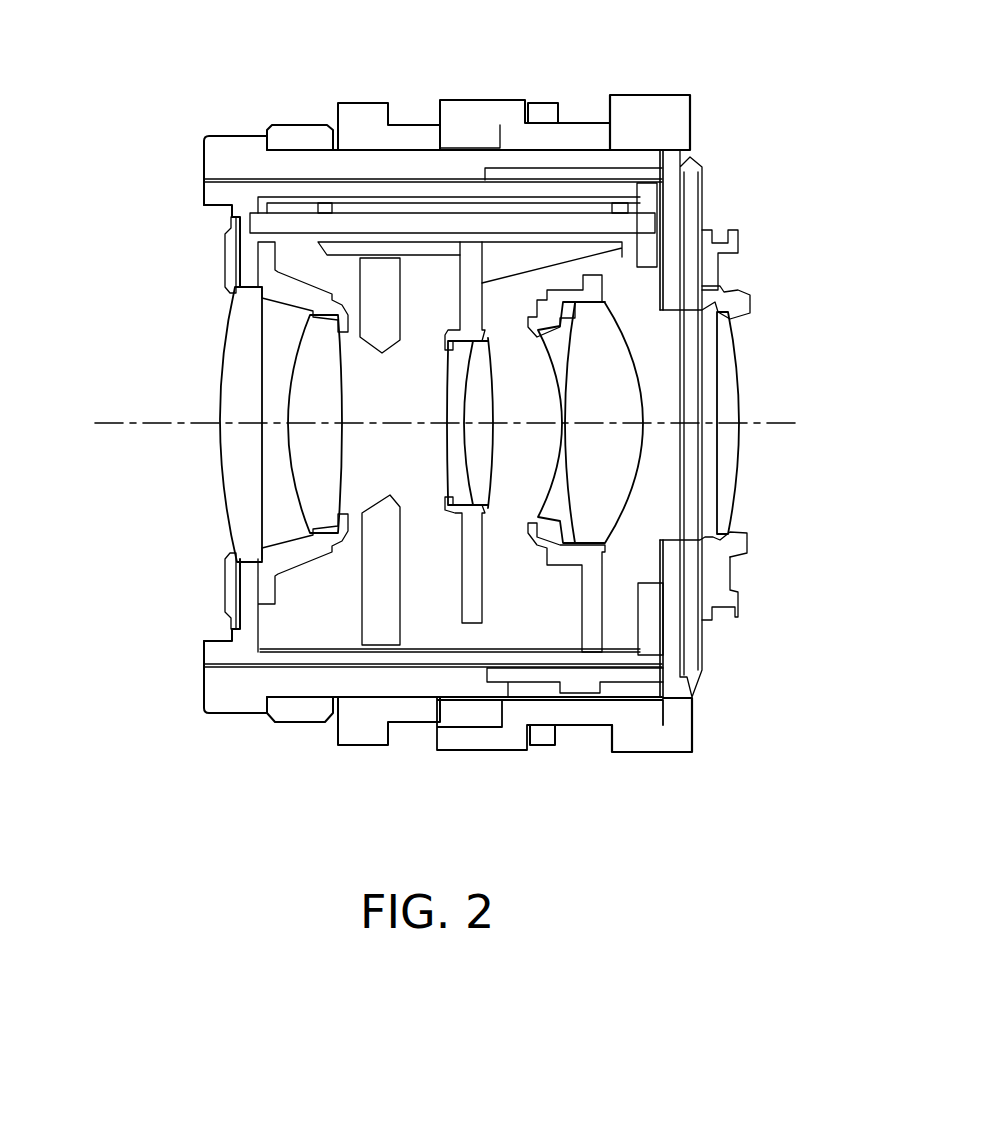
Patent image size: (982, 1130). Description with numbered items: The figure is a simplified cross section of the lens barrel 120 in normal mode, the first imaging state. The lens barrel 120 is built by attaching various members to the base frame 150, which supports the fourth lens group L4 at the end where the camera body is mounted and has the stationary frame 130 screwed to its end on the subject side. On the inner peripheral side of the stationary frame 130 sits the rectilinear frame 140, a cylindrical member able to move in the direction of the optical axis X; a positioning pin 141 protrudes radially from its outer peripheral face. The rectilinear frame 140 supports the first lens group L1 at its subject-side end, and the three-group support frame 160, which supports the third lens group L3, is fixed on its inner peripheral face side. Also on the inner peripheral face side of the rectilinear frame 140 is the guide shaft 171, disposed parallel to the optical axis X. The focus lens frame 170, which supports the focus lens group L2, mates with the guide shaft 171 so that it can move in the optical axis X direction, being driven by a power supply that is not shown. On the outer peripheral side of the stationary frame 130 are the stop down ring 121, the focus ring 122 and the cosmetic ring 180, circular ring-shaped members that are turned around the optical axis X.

The lens barrel 120 is at (730, 106).
The stop down ring 121 is at (292, 136).
The focus ring 122 is at (467, 135).
The stationary frame 130 is at (232, 165).
The rectilinear frame 140 is at (222, 190).
The positioning pin 141 is at (545, 108).
The base frame 150 is at (673, 172).
The three-group support frame 160 is at (593, 615).
The focus lens frame 170 is at (600, 312).
The guide shaft 171 is at (640, 222).
The cosmetic ring 180 is at (353, 116).
The first lens group L1 is at (240, 487).
The focus lens group L2 is at (465, 410).
The third lens group L3 is at (593, 497).
The fourth lens group L4 is at (735, 470).
The optical axis X is at (430, 425).